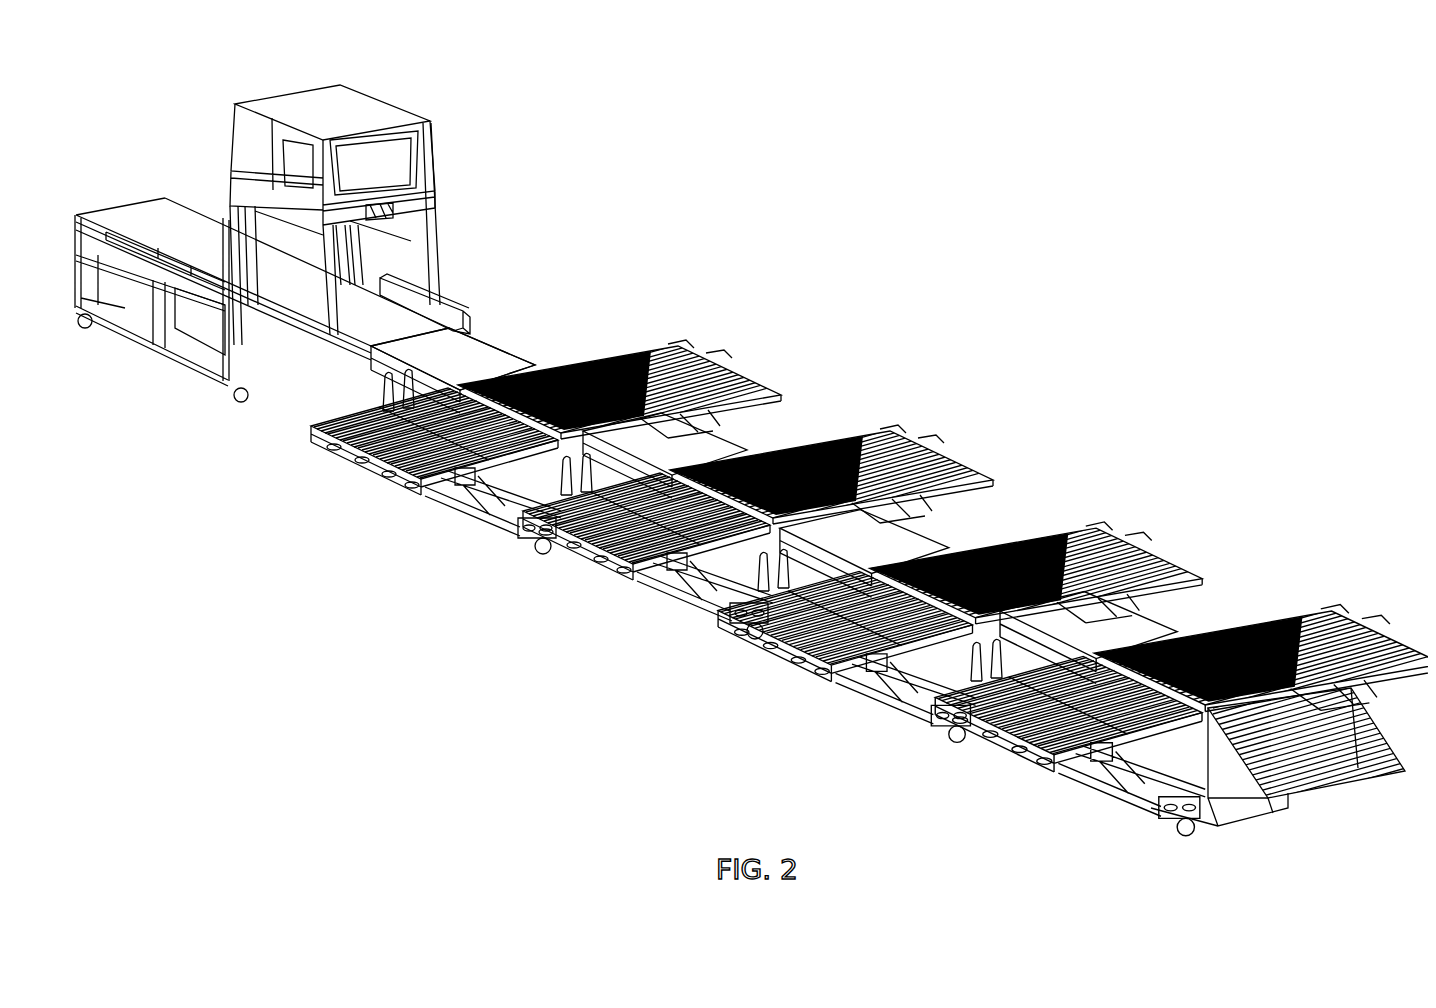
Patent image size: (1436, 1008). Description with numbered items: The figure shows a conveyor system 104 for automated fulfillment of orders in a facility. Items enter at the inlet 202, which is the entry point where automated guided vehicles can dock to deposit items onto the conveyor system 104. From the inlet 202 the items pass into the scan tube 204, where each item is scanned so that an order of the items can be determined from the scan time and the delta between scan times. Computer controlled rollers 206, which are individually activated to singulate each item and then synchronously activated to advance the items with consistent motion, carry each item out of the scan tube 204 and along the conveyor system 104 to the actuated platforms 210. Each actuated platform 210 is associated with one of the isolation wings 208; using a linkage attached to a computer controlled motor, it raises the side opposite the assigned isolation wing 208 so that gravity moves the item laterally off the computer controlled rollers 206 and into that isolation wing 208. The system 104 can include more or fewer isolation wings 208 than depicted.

The conveyor system 104 is at (285, 522).
The inlet 202 is at (150, 210).
The scan tube 204 is at (371, 108).
The computer controlled rollers 206 is at (468, 347).
The isolation wings 208 is at (741, 364).
The actuated platforms 210 is at (735, 450).